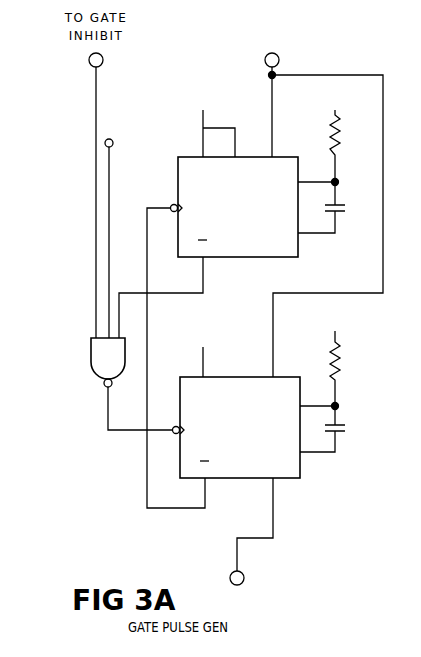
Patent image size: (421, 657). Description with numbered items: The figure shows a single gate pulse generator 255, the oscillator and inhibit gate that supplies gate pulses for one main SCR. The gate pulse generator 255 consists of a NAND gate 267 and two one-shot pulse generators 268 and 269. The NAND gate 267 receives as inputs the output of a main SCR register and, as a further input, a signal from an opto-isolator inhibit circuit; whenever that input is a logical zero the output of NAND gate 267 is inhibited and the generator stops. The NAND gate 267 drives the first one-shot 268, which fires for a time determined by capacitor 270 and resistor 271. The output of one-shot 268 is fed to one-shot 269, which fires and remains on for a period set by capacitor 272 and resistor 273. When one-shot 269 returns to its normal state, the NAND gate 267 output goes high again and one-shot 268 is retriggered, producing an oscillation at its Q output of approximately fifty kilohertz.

The gate pulse generator 255 is at (98, 465).
The NAND gate 267 is at (123, 366).
The one-shot pulse generator 268 is at (181, 387).
The one-shot pulse generator 269 is at (181, 162).
The capacitor 270 is at (348, 431).
The resistor 271 is at (342, 357).
The capacitor 272 is at (345, 208).
The resistor 273 is at (340, 150).